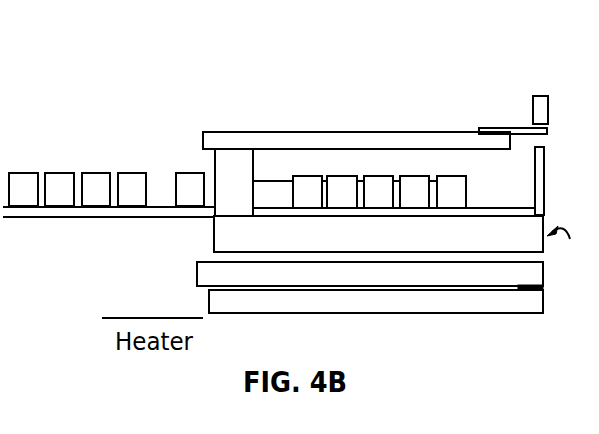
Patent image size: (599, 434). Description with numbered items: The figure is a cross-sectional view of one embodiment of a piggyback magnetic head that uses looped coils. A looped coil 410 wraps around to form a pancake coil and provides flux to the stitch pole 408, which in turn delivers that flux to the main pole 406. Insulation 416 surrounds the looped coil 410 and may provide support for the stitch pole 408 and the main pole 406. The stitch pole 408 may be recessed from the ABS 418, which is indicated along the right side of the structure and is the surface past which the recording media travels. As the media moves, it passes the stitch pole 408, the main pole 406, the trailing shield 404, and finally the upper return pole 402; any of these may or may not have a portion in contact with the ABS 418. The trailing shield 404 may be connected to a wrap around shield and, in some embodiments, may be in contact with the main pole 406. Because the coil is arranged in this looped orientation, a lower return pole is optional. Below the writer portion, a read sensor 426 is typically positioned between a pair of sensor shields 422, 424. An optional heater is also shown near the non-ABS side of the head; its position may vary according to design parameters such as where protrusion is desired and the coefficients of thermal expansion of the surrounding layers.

The upper return pole 402 is at (549, 110).
The trailing shield 404 is at (546, 188).
The main pole 406 is at (514, 128).
The stitch pole 408 is at (380, 131).
The looped coil 410 is at (449, 176).
The insulation 416 is at (428, 245).
The ABS 418 is at (570, 245).
The sensor shield 422 is at (197, 271).
The sensor shield 424 is at (209, 296).
The sensor 426 is at (537, 285).